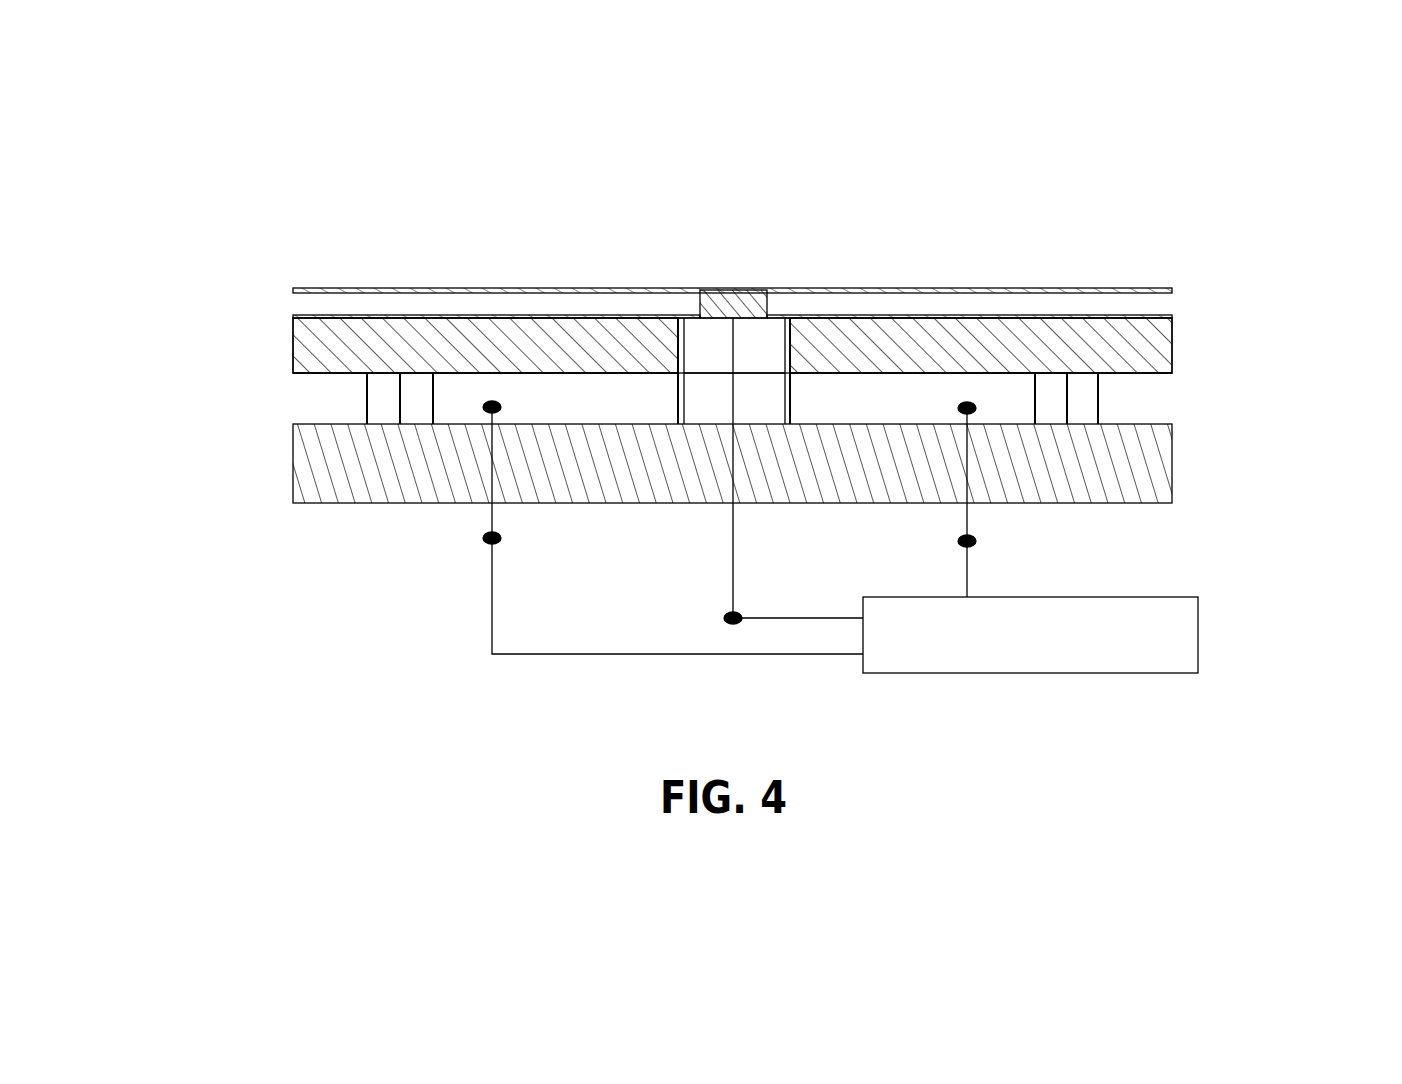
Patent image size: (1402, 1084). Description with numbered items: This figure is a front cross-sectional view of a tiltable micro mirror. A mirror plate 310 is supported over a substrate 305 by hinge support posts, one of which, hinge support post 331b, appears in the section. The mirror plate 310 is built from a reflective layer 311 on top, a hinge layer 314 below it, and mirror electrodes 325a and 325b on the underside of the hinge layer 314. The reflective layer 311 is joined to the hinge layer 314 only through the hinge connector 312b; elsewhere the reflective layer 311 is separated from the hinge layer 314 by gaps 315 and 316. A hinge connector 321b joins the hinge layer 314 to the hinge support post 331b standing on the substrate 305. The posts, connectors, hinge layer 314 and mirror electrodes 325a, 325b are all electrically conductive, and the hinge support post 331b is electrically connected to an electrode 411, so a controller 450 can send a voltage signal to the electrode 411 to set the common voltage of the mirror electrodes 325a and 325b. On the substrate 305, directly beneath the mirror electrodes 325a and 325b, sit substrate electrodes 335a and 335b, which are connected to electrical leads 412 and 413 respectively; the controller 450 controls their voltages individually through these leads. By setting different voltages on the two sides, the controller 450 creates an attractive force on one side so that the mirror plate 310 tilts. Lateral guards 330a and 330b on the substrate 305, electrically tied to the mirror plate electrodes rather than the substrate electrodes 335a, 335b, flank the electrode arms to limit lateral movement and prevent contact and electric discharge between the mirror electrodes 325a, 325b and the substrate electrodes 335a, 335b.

The substrate 305 is at (1092, 493).
The mirror plate 310 is at (148, 278).
The reflective layer 311 is at (1050, 290).
The hinge connector 312b is at (730, 302).
The hinge layer 314 is at (1175, 319).
The gap 315 is at (311, 303).
The gap 316 is at (1156, 307).
The hinge connector 321b is at (706, 342).
The mirror electrode 325a is at (1032, 365).
The mirror electrode 325b is at (545, 365).
The lateral guards 330a is at (1082, 405).
The lateral guards 330b is at (382, 405).
The hinge support post 331b is at (695, 398).
The substrate electrode 335a is at (921, 418).
The substrate electrode 335b is at (608, 418).
The electrode 411 is at (761, 482).
The electrical lead 412 is at (637, 527).
The electrical lead 413 is at (1000, 499).
The controller 450 is at (1098, 657).